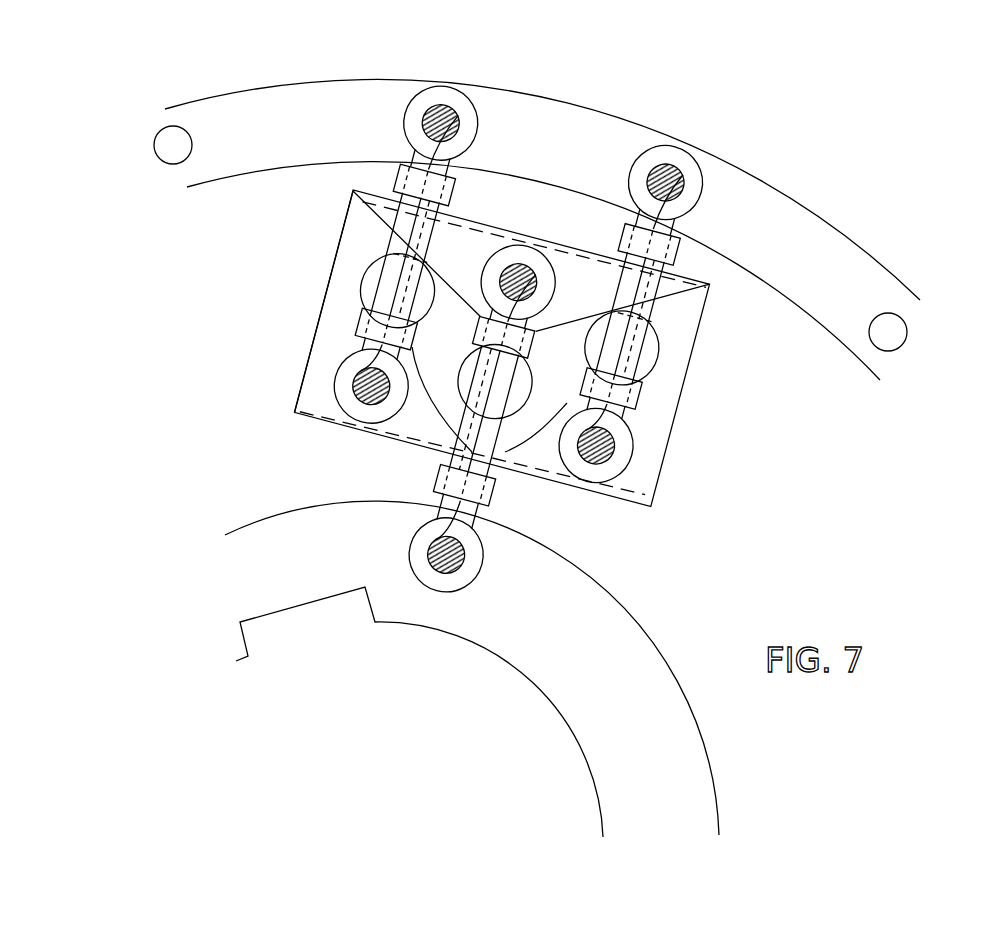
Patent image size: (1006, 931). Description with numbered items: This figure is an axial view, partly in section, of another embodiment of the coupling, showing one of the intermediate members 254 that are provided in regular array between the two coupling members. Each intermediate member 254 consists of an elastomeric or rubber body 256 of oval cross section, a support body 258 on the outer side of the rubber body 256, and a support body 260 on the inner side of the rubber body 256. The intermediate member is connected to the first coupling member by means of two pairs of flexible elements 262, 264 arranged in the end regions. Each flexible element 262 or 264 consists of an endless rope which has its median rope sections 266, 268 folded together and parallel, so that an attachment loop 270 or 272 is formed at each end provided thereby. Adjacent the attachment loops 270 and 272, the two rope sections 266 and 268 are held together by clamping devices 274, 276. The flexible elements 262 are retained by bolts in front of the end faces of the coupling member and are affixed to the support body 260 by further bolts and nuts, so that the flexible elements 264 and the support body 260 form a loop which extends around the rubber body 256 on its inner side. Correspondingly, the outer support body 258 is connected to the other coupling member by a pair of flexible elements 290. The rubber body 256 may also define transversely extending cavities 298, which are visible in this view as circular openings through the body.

The intermediate member 254 is at (676, 430).
The elastomeric or rubber body 256 is at (346, 229).
The support body 258 is at (571, 266).
The support body 260 is at (410, 420).
The flexible element 262 is at (453, 200).
The flexible element 264 is at (628, 304).
The median rope section 266 is at (393, 232).
The median rope section 268 is at (421, 249).
The attachment loop 270 is at (478, 111).
The attachment loop 272 is at (348, 408).
The clamping device 274 is at (397, 172).
The clamping device 276 is at (360, 325).
The flexible element 290 is at (496, 486).
The transversely extending cavity 298 is at (462, 385).